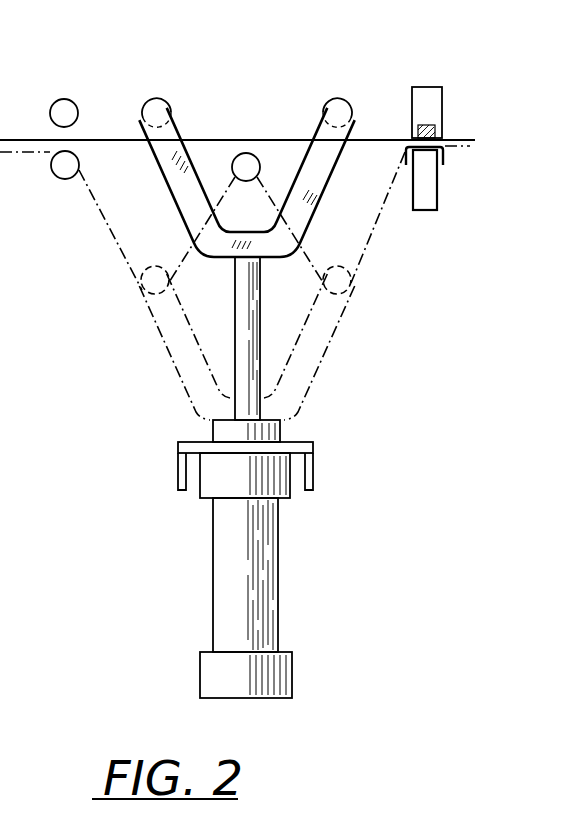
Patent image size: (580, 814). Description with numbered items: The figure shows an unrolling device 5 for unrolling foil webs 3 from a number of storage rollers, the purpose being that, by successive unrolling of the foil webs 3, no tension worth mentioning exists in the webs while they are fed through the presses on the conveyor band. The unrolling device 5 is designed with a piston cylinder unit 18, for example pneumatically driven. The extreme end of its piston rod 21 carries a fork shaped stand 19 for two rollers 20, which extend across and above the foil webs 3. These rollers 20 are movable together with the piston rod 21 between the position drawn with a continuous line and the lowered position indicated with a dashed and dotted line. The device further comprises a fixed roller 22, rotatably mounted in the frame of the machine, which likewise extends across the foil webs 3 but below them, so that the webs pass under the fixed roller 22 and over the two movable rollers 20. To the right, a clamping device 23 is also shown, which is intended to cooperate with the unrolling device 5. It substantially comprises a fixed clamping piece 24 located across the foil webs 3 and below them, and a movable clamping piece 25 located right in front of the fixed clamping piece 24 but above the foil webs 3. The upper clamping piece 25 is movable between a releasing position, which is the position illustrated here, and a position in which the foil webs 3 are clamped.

The foil webs 3 is at (104, 138).
The unrolling device 5 is at (157, 452).
The piston cylinder unit 18 is at (263, 560).
The fork shaped stand 19 is at (172, 137).
The rollers 20 is at (157, 113).
The piston rod 21 is at (247, 332).
The fixed roller 22 is at (245, 160).
The clamping device 23 is at (429, 71).
The fixed clamping piece 24 is at (430, 187).
The movable clamping piece 25 is at (433, 98).